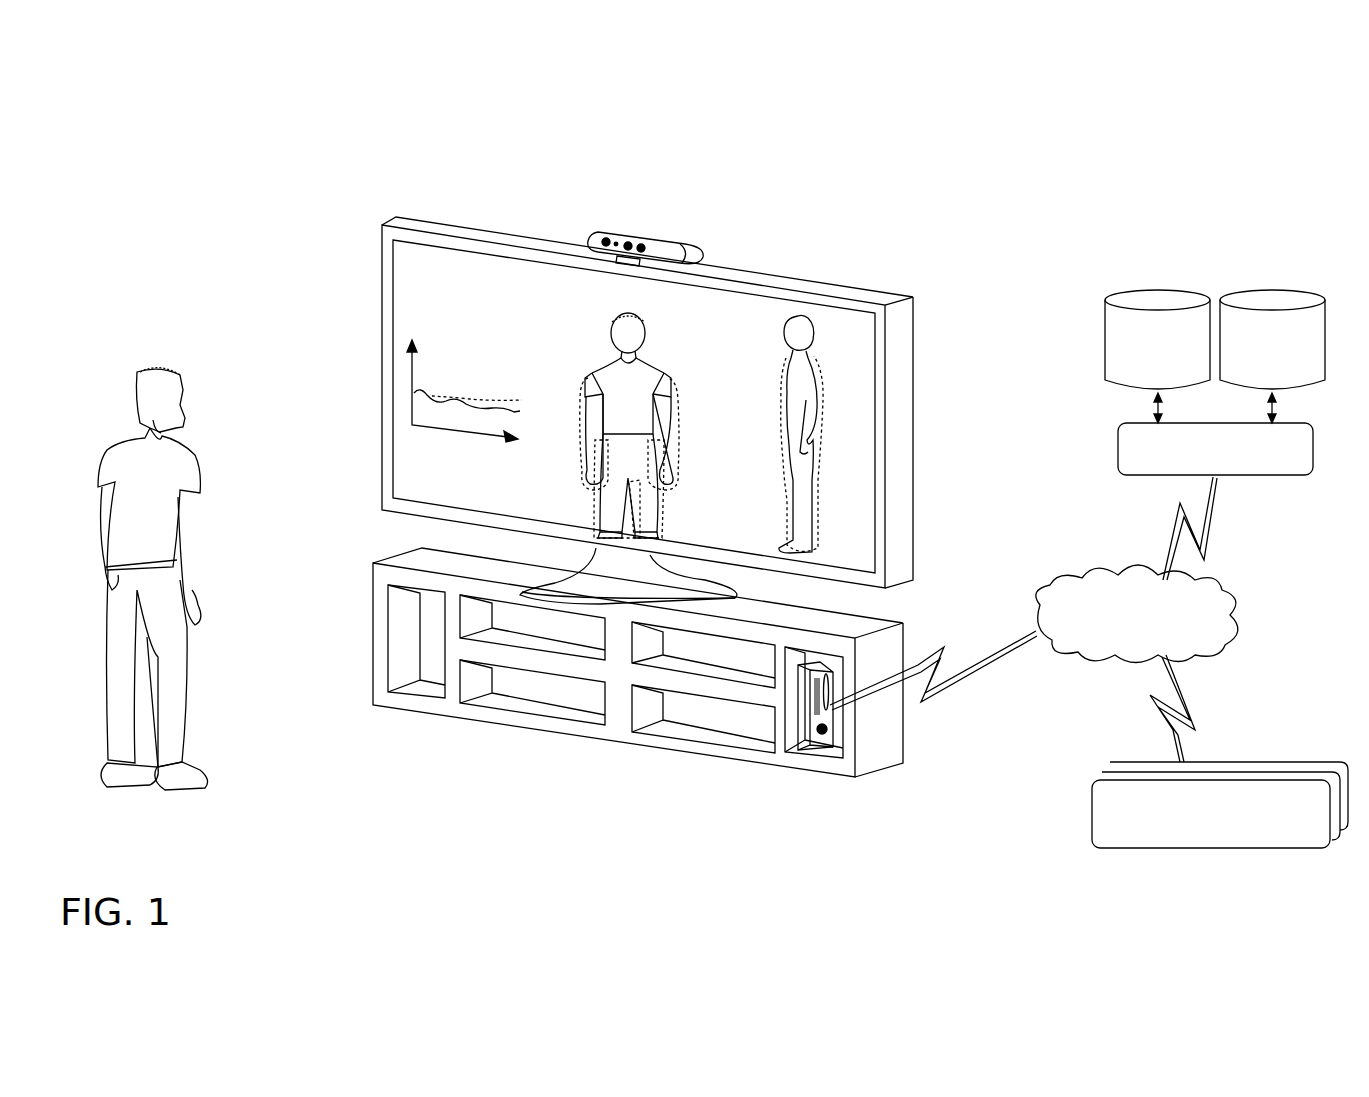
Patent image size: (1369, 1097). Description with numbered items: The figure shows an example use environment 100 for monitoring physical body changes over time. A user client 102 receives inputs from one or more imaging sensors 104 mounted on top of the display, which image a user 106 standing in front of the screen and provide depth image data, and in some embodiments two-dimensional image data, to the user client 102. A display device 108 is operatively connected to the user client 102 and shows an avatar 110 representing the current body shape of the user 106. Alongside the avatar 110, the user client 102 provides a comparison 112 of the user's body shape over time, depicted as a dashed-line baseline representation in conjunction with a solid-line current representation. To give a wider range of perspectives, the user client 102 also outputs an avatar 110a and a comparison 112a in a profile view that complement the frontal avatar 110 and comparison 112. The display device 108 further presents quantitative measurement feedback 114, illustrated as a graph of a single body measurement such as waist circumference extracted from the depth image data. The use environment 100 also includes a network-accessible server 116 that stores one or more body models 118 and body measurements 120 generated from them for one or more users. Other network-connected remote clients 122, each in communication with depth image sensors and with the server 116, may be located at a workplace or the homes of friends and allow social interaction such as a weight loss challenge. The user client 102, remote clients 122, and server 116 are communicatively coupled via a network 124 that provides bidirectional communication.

The use environment 100 is at (830, 112).
The user client 102 is at (829, 740).
The imaging sensors 104 is at (666, 238).
The user 106 is at (108, 445).
The display device 108 is at (381, 266).
The avatar 110 is at (611, 312).
The avatar in profile view 110a is at (780, 320).
The comparison 112 is at (586, 378).
The comparison in profile view 112a is at (781, 385).
The quantitative measurement feedback 114 is at (452, 338).
The network-accessible server 116 is at (1215, 449).
The body models 118 is at (1157, 356).
The body measurements 120 is at (1272, 356).
The remote clients 122 is at (1220, 805).
The network 124 is at (1137, 614).